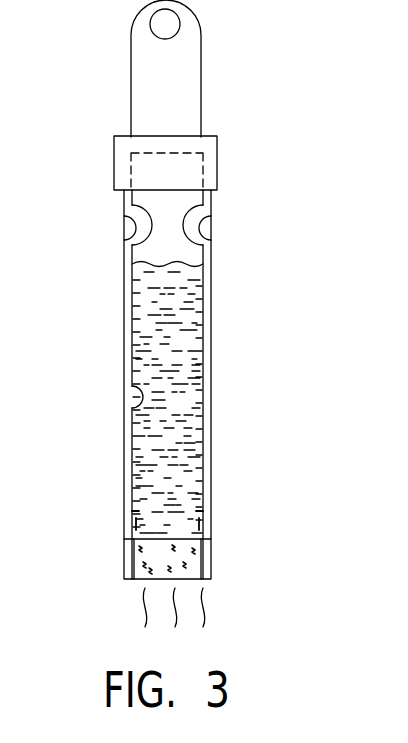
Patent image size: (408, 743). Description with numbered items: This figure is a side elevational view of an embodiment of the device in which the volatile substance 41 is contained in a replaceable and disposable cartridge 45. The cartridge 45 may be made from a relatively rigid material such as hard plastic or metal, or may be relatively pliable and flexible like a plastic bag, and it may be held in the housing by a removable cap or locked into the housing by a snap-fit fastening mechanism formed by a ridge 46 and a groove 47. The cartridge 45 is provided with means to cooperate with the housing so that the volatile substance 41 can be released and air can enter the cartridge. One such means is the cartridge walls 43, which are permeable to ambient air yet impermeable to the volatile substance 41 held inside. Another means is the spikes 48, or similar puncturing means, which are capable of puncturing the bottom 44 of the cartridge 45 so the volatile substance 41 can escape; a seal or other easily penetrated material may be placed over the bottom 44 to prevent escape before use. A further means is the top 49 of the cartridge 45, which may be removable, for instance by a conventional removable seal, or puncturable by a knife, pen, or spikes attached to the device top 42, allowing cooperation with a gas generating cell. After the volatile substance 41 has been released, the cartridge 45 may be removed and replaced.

The volatile substance 41 is at (177, 434).
The device top 42 is at (202, 79).
The cartridge walls 43 is at (134, 393).
The bottom 44 is at (152, 535).
The cartridge 45 is at (198, 366).
The ridge 46 is at (212, 227).
The groove 47 is at (146, 204).
The spikes 48 is at (123, 510).
The top 49 is at (158, 158).